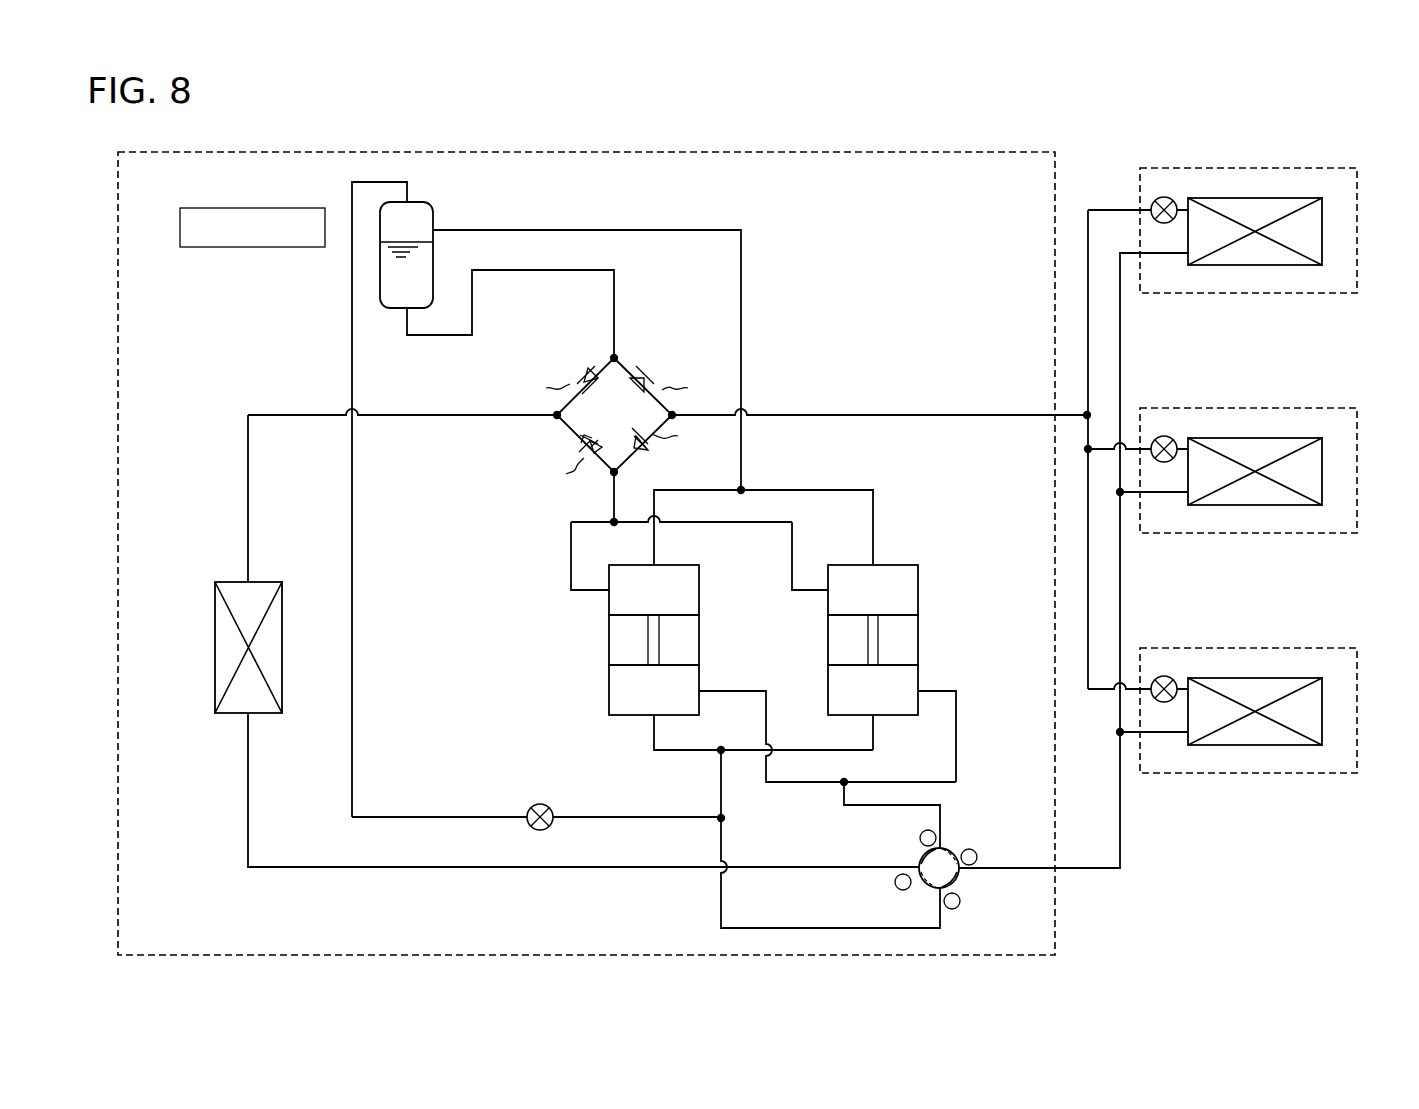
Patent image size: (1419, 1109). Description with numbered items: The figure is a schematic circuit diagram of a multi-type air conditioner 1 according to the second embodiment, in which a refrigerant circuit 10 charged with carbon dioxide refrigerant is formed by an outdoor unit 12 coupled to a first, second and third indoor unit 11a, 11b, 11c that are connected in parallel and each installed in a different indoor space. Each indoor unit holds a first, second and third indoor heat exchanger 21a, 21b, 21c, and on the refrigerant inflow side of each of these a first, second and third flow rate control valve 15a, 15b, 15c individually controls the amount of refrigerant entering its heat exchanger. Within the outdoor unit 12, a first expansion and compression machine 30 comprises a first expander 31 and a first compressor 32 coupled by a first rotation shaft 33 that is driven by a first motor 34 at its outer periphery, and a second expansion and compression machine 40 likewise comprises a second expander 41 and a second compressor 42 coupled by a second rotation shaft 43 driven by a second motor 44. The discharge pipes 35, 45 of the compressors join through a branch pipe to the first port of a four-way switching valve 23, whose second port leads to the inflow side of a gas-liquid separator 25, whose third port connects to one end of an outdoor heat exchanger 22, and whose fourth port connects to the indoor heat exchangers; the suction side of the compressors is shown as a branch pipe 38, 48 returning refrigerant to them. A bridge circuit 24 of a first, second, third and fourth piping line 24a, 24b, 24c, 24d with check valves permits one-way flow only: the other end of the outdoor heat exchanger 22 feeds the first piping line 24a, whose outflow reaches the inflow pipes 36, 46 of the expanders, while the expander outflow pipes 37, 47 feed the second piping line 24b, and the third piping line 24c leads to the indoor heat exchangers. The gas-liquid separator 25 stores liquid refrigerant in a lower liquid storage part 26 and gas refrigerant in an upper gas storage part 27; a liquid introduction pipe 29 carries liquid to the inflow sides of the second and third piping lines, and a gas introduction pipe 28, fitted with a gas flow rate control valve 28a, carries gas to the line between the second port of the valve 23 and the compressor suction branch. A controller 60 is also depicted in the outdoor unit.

The air conditioner 1 is at (1380, 132).
The refrigerant circuit 10 is at (904, 400).
The first indoor unit 11a is at (1222, 227).
The second indoor unit 11b is at (1221, 467).
The third indoor unit 11c is at (1222, 707).
The outdoor unit 12 is at (913, 152).
The first flow rate control valve 15a is at (1164, 197).
The second flow rate control valve 15b is at (1164, 435).
The third flow rate control valve 15c is at (1164, 675).
The first indoor heat exchanger 21a is at (1263, 266).
The second indoor heat exchanger 21b is at (1263, 506).
The third indoor heat exchanger 21c is at (1263, 746).
The outdoor heat exchanger 22 is at (264, 714).
The four-way switching valve 23 is at (968, 884).
The bridge circuit 24 is at (613, 387).
The first piping line 24a is at (562, 436).
The second piping line 24b is at (600, 364).
The third piping line 24c is at (636, 364).
The fourth piping line 24d is at (628, 478).
The gas-liquid separator 25 is at (437, 264).
The liquid storage part 26 is at (395, 310).
The gas storage part 27 is at (434, 218).
The gas introduction pipe 28 is at (352, 692).
The gas flow rate control valve 28a is at (542, 804).
The liquid introduction pipe 29 is at (527, 270).
The first expansion and compression machine 30 is at (634, 640).
The first expander 31 is at (700, 590).
The first compressor 32 is at (609, 691).
The first rotation shaft 33 is at (658, 628).
The first motor 34 is at (609, 639).
The discharge pipe 35 is at (739, 698).
The inflow pipe 36 is at (589, 586).
The outflow pipe 37 is at (654, 549).
The suction pipe 38 is at (653, 740).
The second expansion and compression machine 40 is at (902, 640).
The second expander 41 is at (919, 578).
The second compressor 42 is at (841, 691).
The second rotation shaft 43 is at (876, 636).
The second motor 44 is at (841, 639).
The discharge pipe 45 is at (941, 701).
The inflow pipe 46 is at (813, 586).
The outflow pipe 47 is at (873, 527).
The suction pipe 48 is at (873, 734).
The controller 60 is at (231, 202).